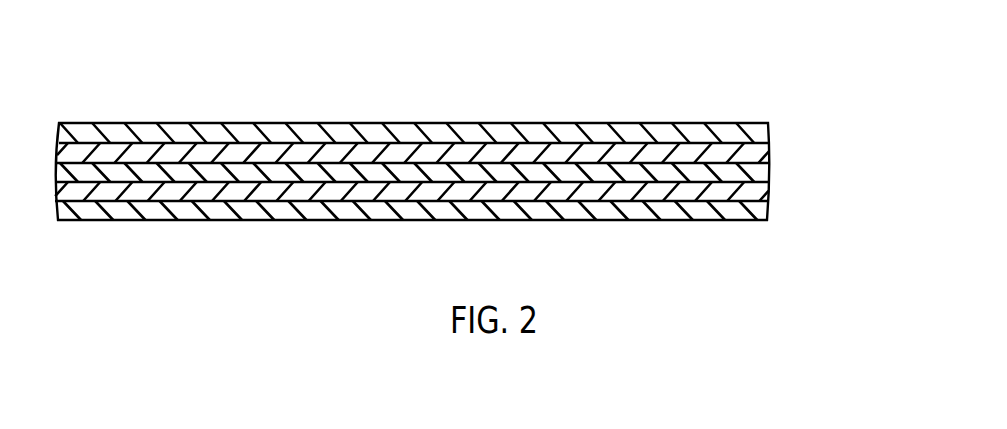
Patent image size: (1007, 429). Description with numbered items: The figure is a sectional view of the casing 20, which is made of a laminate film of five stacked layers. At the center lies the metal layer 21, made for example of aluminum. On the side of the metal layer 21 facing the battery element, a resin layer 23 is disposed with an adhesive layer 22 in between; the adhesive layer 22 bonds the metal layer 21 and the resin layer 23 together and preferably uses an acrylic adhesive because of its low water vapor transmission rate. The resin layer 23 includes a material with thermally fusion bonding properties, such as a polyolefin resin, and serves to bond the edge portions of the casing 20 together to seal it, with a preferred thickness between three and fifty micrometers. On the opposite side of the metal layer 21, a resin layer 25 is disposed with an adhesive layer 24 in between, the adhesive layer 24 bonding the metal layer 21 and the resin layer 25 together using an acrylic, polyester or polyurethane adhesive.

The casing 20 is at (580, 100).
The metal layer 21 is at (761, 172).
The adhesive layer 22 is at (752, 191).
The resin layer 23 is at (767, 218).
The adhesive layer 24 is at (752, 152).
The resin layer 25 is at (753, 130).